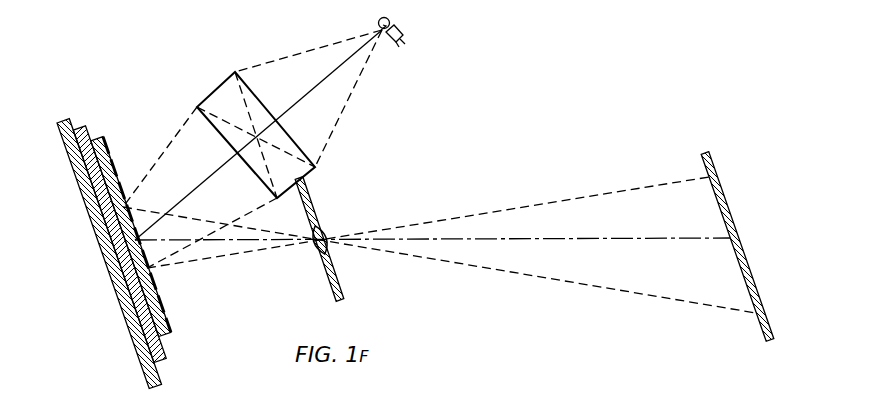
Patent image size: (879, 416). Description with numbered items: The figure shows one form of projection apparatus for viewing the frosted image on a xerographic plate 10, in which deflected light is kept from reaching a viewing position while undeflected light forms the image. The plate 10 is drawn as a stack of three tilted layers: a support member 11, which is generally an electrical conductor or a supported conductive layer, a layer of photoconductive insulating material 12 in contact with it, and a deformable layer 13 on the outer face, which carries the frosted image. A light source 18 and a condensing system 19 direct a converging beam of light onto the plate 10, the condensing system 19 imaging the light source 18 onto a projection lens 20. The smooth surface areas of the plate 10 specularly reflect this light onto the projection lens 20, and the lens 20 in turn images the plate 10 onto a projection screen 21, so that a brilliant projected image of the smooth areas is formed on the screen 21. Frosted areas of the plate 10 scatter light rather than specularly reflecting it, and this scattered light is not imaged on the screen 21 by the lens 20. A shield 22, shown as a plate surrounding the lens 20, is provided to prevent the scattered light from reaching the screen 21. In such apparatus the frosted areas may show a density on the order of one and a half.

The xerographic plate 10 is at (129, 260).
The support member 11 is at (152, 388).
The layer of photoconductive insulating material 12 is at (160, 361).
The deformable layer 13 is at (166, 335).
The light source 18 is at (393, 21).
The condensing system 19 is at (221, 80).
The projection lens 20 is at (326, 231).
The projection screen 21 is at (717, 183).
The shield 22 is at (343, 295).